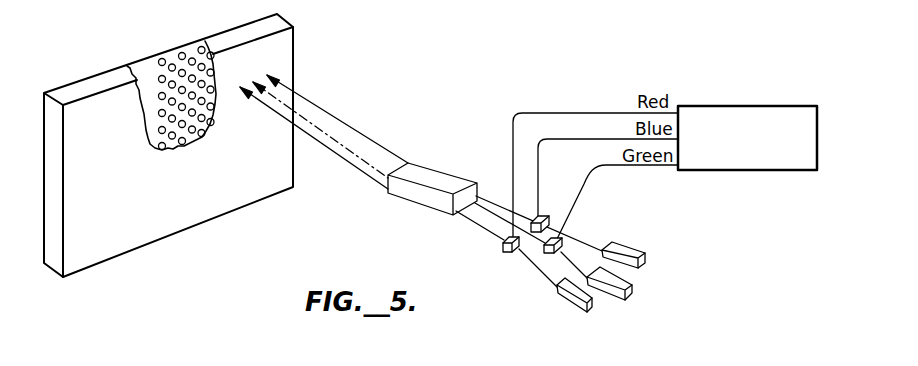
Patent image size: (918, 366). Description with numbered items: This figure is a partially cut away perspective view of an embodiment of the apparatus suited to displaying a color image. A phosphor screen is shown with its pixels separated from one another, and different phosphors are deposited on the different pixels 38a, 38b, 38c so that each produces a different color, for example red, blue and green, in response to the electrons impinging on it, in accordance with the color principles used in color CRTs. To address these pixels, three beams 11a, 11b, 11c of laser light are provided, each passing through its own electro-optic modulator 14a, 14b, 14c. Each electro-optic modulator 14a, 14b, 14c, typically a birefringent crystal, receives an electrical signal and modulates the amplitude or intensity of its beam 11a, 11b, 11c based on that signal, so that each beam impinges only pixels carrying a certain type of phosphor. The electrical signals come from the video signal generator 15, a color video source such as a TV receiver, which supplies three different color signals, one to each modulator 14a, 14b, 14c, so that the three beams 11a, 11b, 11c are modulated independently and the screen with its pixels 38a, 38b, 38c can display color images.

The pixel 38a is at (160, 59).
The pixel 38b is at (171, 60).
The pixel 38c is at (182, 52).
The beam 11a is at (348, 160).
The beam 11b is at (345, 140).
The beam 11c is at (320, 109).
The electro-optic modulator 14a is at (504, 246).
The electro-optic modulator 14b is at (560, 233).
The electro-optic modulator 14c is at (540, 214).
The video signal generator 15 is at (770, 106).